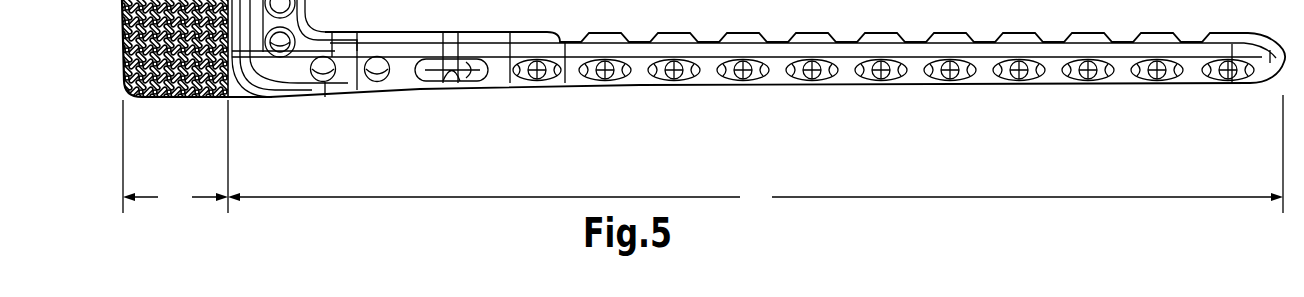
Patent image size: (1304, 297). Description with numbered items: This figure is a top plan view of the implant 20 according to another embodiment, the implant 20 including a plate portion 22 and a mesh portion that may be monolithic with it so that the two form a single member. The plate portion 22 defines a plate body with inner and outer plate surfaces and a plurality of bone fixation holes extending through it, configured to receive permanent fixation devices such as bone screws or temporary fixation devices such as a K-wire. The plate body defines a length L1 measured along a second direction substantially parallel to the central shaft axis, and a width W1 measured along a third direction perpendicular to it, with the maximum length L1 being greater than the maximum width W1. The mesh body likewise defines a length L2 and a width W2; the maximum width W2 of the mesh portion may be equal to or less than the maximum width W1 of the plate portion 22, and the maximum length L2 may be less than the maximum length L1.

The implant 20 is at (699, 87).
The plate portion 22 is at (915, 73).
The width of the plate body W1 is at (278, 104).
The width of the mesh body W2 is at (168, 104).
The length of the plate body L1 is at (755, 154).
The length of the mesh body L2 is at (175, 181).